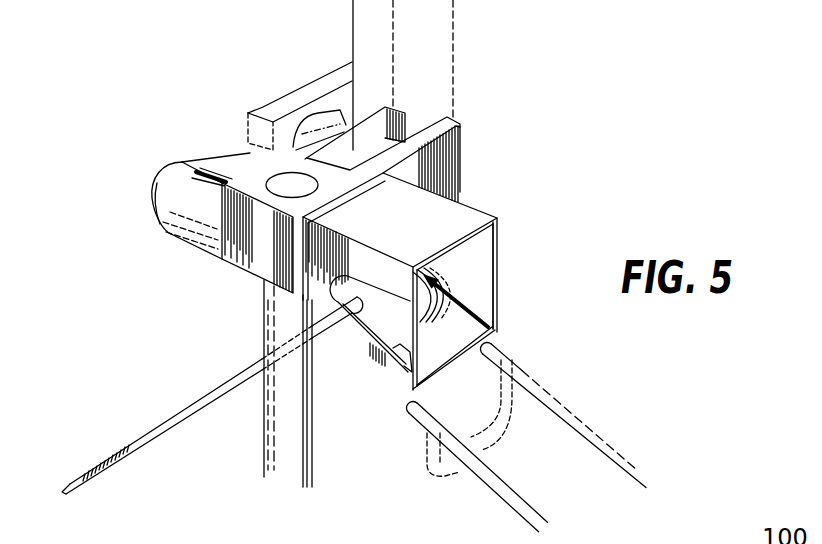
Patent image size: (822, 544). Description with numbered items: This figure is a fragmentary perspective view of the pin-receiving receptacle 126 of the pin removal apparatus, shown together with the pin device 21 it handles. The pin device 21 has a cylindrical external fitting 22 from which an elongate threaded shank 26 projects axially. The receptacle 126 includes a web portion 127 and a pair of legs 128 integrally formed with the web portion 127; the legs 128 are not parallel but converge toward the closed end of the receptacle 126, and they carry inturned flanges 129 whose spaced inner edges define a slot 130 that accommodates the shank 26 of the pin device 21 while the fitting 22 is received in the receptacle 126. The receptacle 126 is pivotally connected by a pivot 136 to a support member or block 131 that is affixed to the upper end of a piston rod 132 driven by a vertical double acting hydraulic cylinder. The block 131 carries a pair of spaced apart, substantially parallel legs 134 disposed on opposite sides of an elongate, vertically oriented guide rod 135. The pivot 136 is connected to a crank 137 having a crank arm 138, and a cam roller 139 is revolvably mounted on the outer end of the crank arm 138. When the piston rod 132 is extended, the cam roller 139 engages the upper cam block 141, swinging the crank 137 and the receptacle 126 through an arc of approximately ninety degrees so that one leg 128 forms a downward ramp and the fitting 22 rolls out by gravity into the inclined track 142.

The pin device 21 is at (168, 424).
The external fitting 22 is at (466, 289).
The threaded shank 26 is at (150, 445).
The receptacle 126 is at (516, 232).
The web portion 127 is at (497, 276).
The legs 128 is at (460, 217).
The inturned flanges 129 is at (398, 380).
The slot 130 is at (392, 362).
The support member or block 131 is at (248, 268).
The piston rod 132 is at (267, 463).
The legs 134 is at (463, 141).
The guide rod 135 is at (453, 52).
The pivot 136 is at (152, 200).
The crank 137 is at (157, 170).
The crank arm 138 is at (228, 172).
The cam roller 139 is at (298, 143).
The upper cam block 141 is at (267, 108).
The inclined track 142 is at (574, 419).